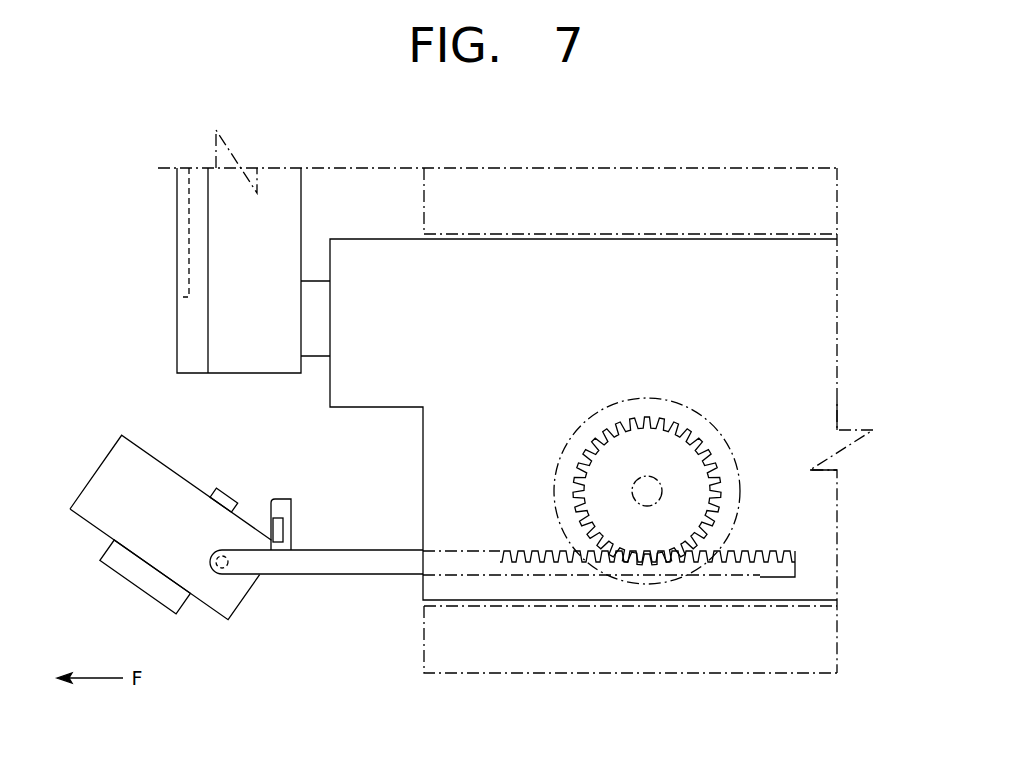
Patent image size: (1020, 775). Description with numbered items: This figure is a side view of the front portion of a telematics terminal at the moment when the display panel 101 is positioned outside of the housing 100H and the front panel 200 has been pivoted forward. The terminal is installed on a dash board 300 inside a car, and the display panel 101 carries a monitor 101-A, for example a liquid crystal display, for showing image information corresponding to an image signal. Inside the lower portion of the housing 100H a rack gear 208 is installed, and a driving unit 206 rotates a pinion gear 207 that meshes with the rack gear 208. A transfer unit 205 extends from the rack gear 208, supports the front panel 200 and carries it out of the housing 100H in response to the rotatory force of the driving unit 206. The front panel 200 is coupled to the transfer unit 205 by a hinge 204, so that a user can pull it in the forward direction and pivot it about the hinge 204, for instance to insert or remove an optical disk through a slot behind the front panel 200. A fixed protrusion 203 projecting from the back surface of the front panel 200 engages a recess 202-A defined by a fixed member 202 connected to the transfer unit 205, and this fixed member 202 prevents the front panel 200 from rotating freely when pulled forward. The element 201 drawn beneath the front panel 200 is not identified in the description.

The display panel 101 is at (218, 283).
The monitor 101-A is at (183, 223).
The housing 100H is at (828, 283).
The dash board 300 is at (828, 206).
The front panel 200 is at (92, 511).
The motor 201 is at (117, 569).
The fixed member 202 is at (285, 505).
The recess 202-A is at (282, 530).
The fixed protrusion 203 is at (229, 496).
The hinge 204 is at (222, 570).
The transfer unit 205 is at (353, 567).
The driving unit 206 is at (732, 491).
The pinion gear 207 is at (706, 520).
The rack gear 208 is at (790, 556).